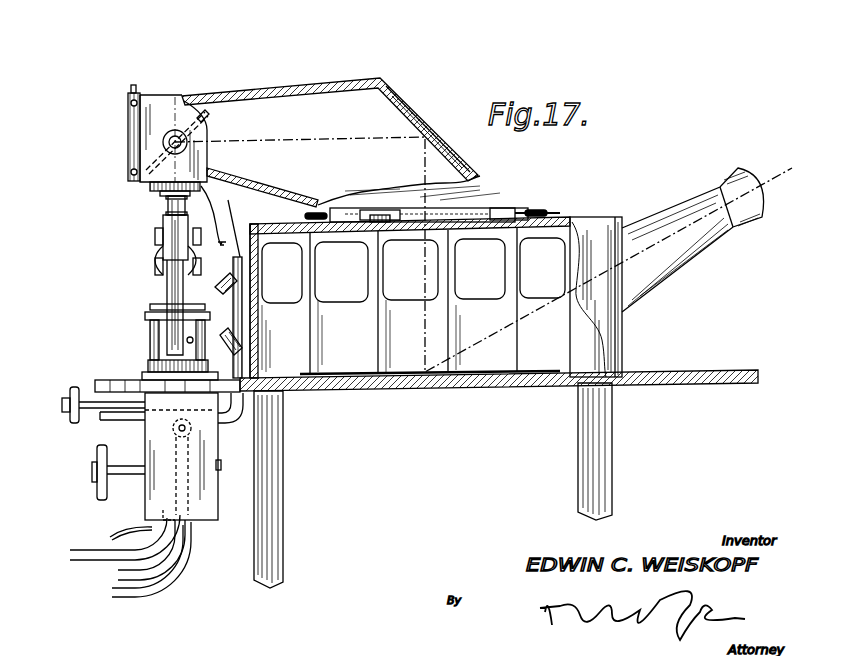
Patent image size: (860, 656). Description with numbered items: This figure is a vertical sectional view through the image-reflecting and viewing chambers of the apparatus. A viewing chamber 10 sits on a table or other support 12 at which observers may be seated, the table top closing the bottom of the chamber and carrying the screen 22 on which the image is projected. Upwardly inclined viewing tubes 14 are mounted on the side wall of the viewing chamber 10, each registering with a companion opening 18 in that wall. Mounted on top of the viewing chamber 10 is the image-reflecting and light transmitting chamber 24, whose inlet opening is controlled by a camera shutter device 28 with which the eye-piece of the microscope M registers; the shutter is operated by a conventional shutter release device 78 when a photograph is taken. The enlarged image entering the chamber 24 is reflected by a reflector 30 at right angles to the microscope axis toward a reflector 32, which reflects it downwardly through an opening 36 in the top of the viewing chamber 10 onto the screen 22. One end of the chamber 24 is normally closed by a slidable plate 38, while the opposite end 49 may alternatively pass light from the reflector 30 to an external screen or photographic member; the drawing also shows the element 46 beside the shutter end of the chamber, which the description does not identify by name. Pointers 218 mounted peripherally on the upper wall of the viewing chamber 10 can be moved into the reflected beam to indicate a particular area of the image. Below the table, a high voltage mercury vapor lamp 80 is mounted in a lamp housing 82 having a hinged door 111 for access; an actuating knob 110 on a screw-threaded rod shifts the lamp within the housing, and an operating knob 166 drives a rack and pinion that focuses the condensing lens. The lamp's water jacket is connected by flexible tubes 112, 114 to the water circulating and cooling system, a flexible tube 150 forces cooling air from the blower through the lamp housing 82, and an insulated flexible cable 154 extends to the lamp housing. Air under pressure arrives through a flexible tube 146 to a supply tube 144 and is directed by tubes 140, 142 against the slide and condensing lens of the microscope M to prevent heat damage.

The viewing chamber 10 is at (585, 217).
The table or other support 12 is at (720, 366).
The viewing tube 14 is at (697, 186).
The opening 18 is at (273, 293).
The screen 22 is at (518, 371).
The image-reflecting and light transmitting chamber 24 is at (342, 71).
The camera shutter device 28 is at (153, 186).
The reflector 30 is at (200, 105).
The reflector 32 is at (393, 113).
The opening 36 is at (353, 176).
The plate 38 is at (131, 143).
The shaft bearing 46 is at (173, 130).
The opposite end 49 is at (396, 88).
The shutter release device 78 is at (216, 226).
The high voltage mercury vapor lamp 80 is at (172, 432).
The lamp housing 82 is at (216, 528).
The actuating knob 110 is at (100, 495).
The hinged door 111 is at (205, 451).
The flexible tube 112 is at (165, 585).
The flexible tube 114 is at (128, 572).
The tube 140 is at (226, 276).
The tube 142 is at (226, 332).
The tube 144 is at (229, 222).
The flexible tube 146 is at (115, 420).
The flexible tube 150 is at (100, 560).
The flexible cable 154 is at (126, 532).
The operating knob 166 is at (70, 397).
The pointer 218 is at (296, 216).
The microscope M is at (161, 293).